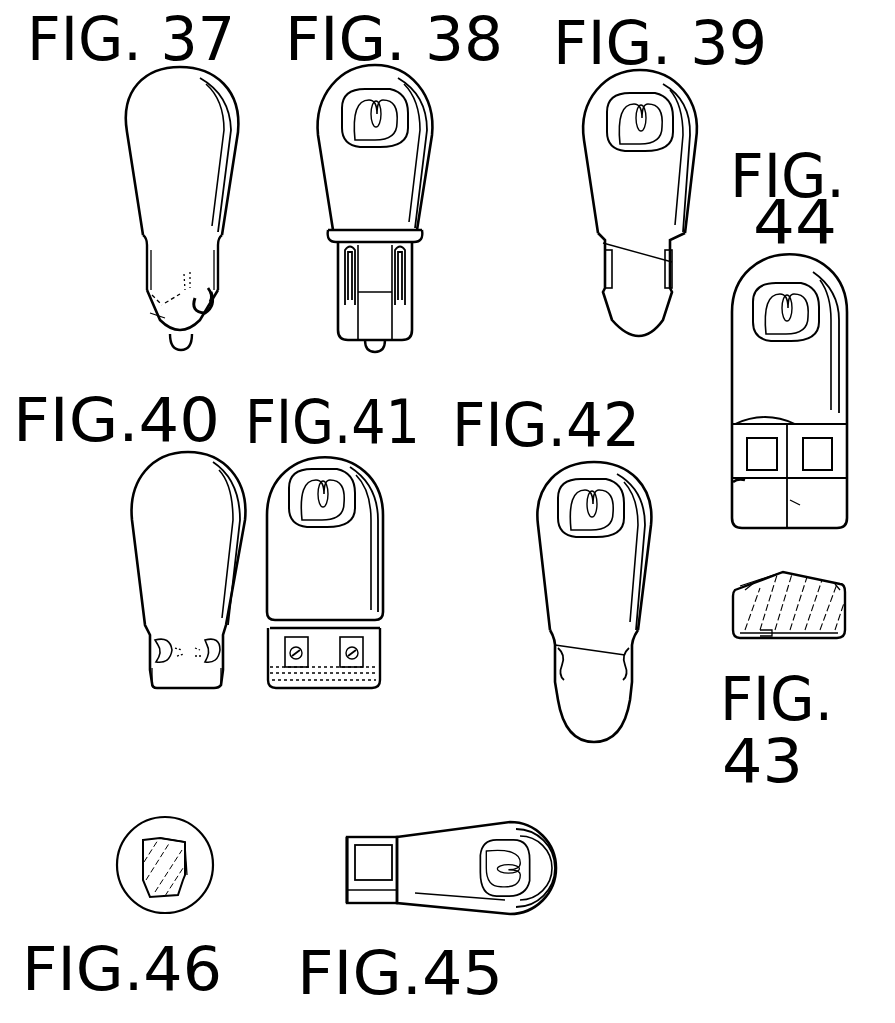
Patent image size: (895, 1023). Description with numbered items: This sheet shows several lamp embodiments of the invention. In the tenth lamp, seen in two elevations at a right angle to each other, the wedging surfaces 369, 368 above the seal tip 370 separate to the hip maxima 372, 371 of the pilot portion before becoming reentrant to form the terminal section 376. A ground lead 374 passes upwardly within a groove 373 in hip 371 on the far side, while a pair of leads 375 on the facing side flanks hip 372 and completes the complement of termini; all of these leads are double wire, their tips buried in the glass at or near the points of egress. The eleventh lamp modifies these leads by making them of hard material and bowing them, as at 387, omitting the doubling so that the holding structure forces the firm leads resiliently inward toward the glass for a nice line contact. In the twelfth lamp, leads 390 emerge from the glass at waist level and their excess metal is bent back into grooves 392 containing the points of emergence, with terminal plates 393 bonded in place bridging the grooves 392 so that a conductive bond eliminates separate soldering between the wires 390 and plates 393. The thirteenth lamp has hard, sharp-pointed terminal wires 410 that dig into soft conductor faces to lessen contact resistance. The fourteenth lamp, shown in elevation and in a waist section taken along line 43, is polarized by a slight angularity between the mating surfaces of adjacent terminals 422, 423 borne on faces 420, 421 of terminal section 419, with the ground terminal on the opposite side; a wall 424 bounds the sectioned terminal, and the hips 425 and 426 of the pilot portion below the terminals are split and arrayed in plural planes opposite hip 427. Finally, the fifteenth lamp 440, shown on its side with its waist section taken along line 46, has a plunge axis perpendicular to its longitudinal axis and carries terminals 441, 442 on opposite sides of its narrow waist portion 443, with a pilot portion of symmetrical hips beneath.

In FIG. 37, the wedging surface 368 is at (150, 313).
In FIG. 37, the wedging surface 369 is at (213, 311).
In FIG. 38, the wedging surface 369 is at (380, 335).
In FIG. 38, the seal tip 370 is at (365, 348).
In FIG. 37, the hip maximum 371 is at (155, 305).
In FIG. 37, the hip maximum 372 is at (214, 292).
In FIG. 38, the hip maximum 372 is at (365, 295).
In FIG. 37, the groove 373 is at (147, 300).
In FIG. 37, the ground lead 374 is at (143, 255).
In FIG. 37, the leads 375 is at (214, 258).
In FIG. 38, the leads 375 is at (395, 258).
In FIG. 37, the terminal section 376 is at (168, 253).
In FIG. 38, the terminal section 376 is at (340, 255).
In FIG. 39, the bowed leads 387 is at (605, 258).
In FIG. 40, the leads 390 is at (208, 660).
In FIG. 41, the leads 390 is at (350, 660).
In FIG. 40, the grooves 392 is at (210, 650).
In FIG. 41, the grooves 392 is at (372, 650).
In FIG. 40, the terminal plates 393 is at (222, 672).
In FIG. 41, the terminal plates 393 is at (285, 665).
In FIG. 42, the terminal wires 410 is at (552, 660).
In FIG. 43, the terminal section 419 is at (740, 586).
In FIG. 44, the face 420 is at (740, 416).
In FIG. 44, the face 421 is at (737, 437).
In FIG. 44, the terminal 422 is at (805, 470).
In FIG. 43, the terminal 422 is at (789, 605).
In FIG. 44, the terminal 423 is at (737, 455).
In FIG. 43, the terminal 423 is at (733, 600).
In FIG. 43, the bottom wall 424 is at (765, 632).
In FIG. 44, the hip 425 is at (810, 463).
In FIG. 43, the hip 425 is at (838, 584).
In FIG. 44, the hip 426 is at (740, 480).
In FIG. 43, the hip 426 is at (745, 585).
In FIG. 43, the hip 427 is at (745, 640).
In FIG. 44, the section line 43 is at (835, 433).
In FIG. 46, the lamp 440 is at (190, 902).
In FIG. 45, the lamp 440 is at (435, 893).
In FIG. 46, the terminal 441 is at (143, 855).
In FIG. 46, the terminal 442 is at (186, 865).
In FIG. 45, the terminal 442 is at (358, 862).
In FIG. 46, the narrow waist portion 443 is at (178, 838).
In FIG. 45, the narrow waist portion 443 is at (370, 845).
In FIG. 45, the section line 46 is at (392, 913).